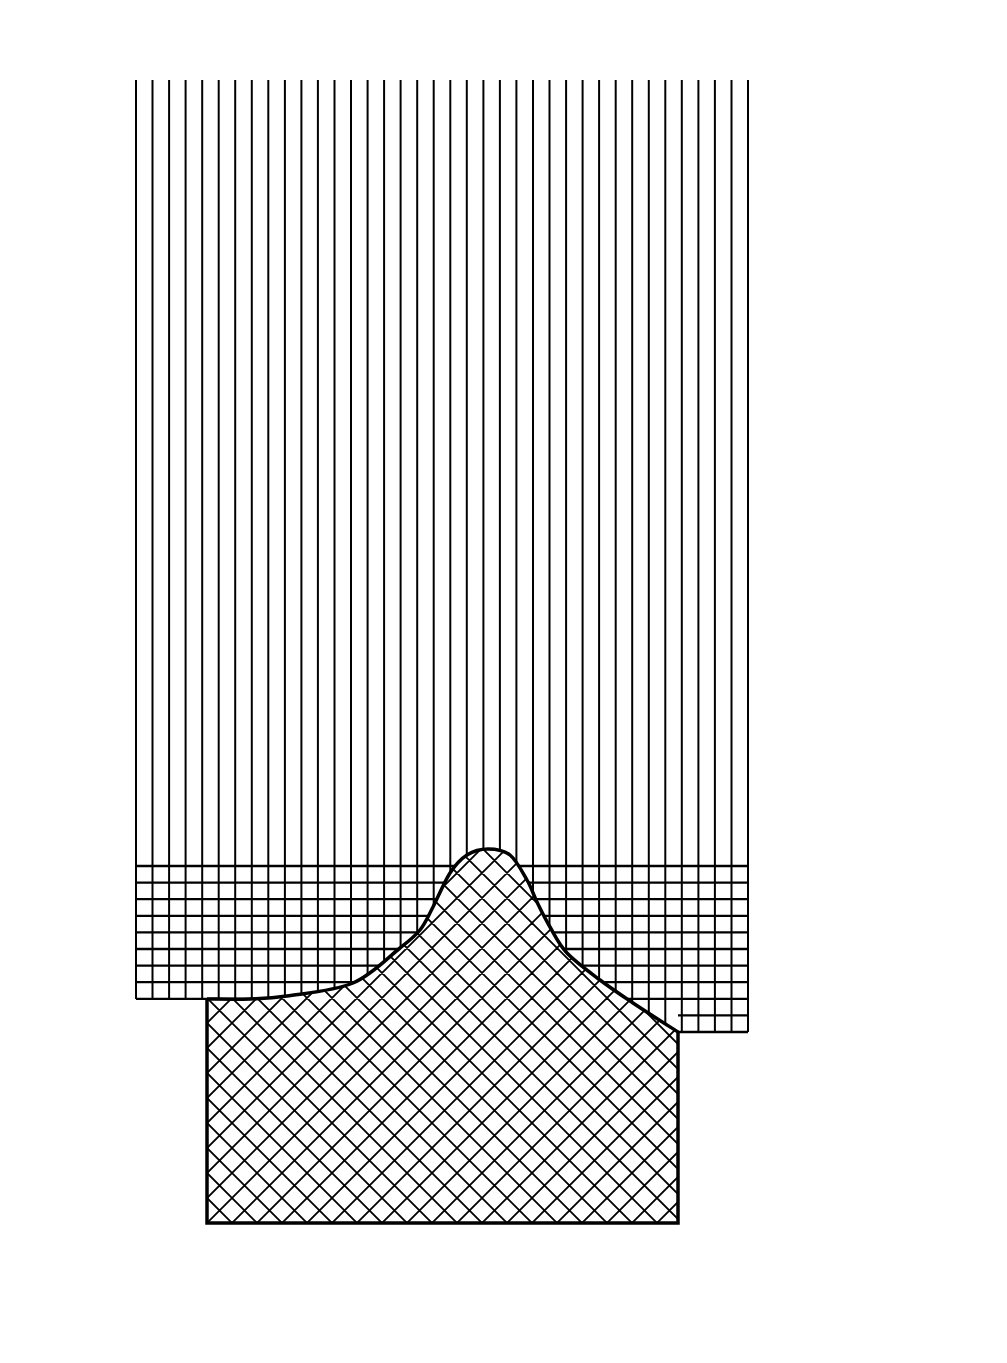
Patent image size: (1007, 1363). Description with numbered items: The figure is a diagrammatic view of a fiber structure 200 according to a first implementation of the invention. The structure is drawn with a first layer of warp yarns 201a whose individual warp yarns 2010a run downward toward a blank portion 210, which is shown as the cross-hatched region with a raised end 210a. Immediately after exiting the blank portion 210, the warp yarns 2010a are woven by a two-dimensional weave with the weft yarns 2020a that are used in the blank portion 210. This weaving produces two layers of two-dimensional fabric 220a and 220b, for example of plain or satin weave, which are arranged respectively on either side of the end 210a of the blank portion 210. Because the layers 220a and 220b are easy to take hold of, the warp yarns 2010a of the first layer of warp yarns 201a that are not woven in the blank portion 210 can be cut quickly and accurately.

The fiber structure 200 is at (90, 78).
The first layer of warp yarns 201a is at (748, 70).
The warp yarns 2010a is at (715, 193).
The layer of two-dimensional fabric 220a is at (395, 915).
The weft yarns 2020a is at (145, 900).
The end of the blank portion 210a is at (537, 912).
The layer of two-dimensional fabric 220b is at (690, 958).
The blank portion 210 is at (516, 868).